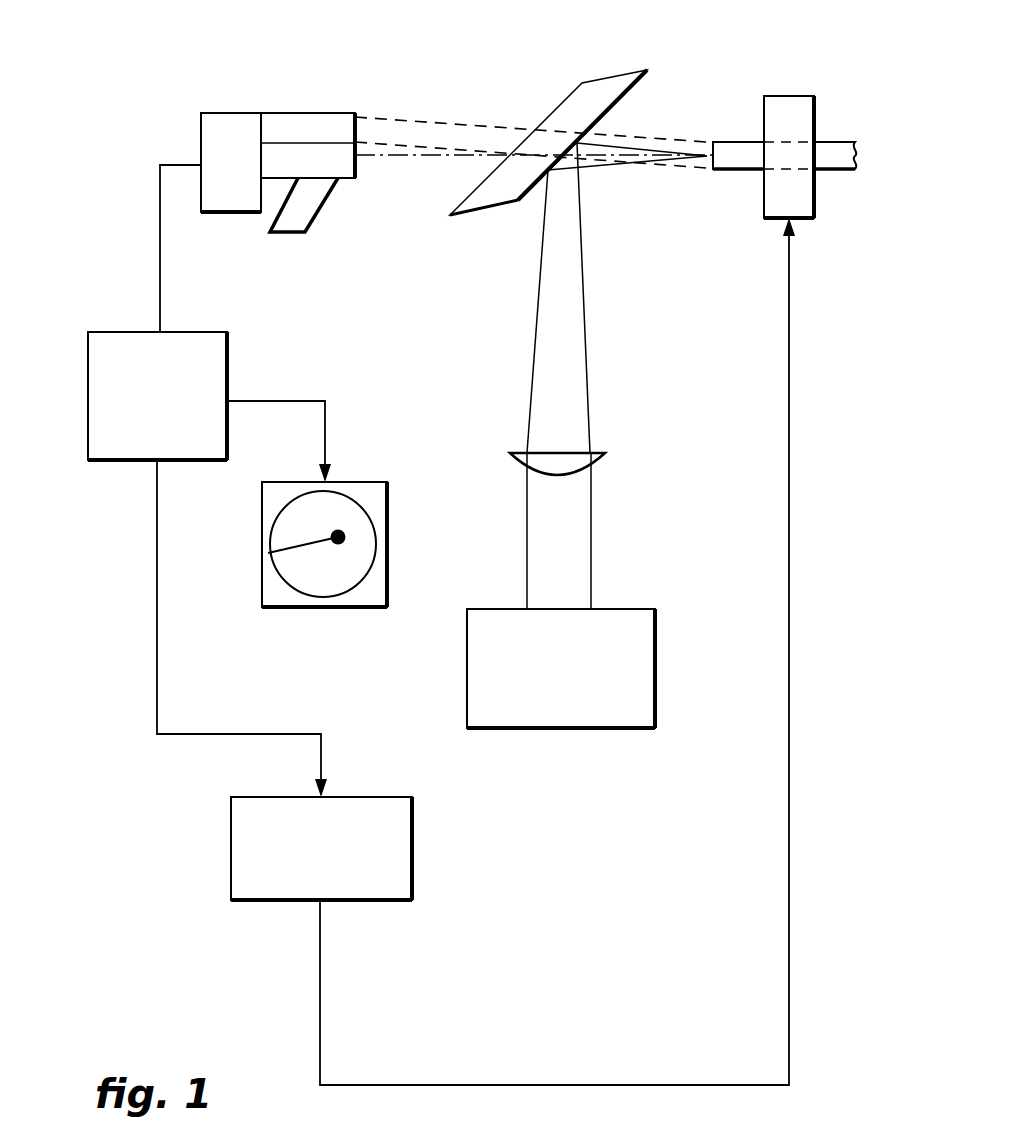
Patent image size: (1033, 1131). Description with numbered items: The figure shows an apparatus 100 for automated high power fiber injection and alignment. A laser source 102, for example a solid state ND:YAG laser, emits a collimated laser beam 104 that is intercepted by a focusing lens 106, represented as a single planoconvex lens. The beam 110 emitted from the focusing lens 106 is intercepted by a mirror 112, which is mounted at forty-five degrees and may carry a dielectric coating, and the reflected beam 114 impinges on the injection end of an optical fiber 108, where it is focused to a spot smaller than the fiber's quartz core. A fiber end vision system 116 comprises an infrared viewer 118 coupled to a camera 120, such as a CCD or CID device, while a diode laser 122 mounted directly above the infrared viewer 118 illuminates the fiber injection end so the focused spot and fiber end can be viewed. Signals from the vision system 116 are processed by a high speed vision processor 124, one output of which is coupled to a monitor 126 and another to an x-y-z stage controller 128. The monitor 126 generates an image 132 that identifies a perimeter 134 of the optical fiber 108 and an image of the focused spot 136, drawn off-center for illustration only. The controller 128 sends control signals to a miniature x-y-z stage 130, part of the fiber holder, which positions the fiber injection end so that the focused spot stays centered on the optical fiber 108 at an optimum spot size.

The apparatus 100 is at (728, 42).
The laser source 102 is at (467, 672).
The collimated laser beam 104 is at (591, 557).
The focusing lens 106 is at (606, 457).
The optical fiber 108 is at (727, 142).
The beam 110 is at (588, 367).
The mirror 112 is at (556, 110).
The reflected beam 114 is at (600, 167).
The fiber end vision system 116 is at (287, 90).
The infrared viewer 118 is at (314, 214).
The camera 120 is at (212, 113).
The diode laser 122 is at (333, 113).
The high speed vision processor 124 is at (114, 332).
The monitor 126 is at (387, 582).
The x-y-z stage controller 128 is at (231, 831).
The miniature x-y-z stage 130 is at (790, 96).
The image 132 is at (376, 539).
The perimeter 134 is at (363, 513).
The image of the focused spot 136 is at (268, 552).